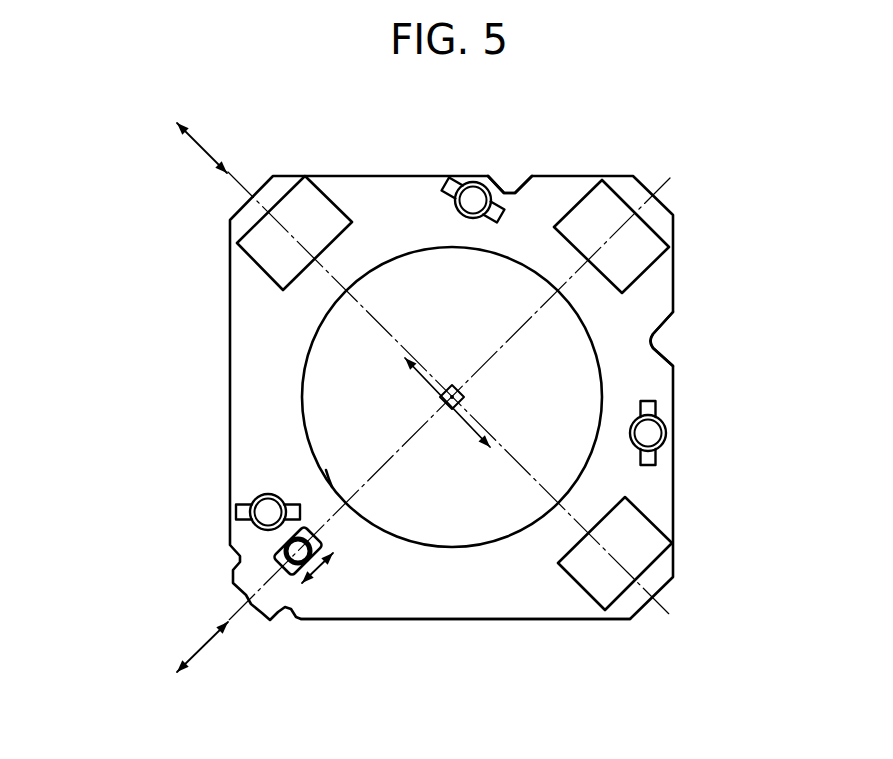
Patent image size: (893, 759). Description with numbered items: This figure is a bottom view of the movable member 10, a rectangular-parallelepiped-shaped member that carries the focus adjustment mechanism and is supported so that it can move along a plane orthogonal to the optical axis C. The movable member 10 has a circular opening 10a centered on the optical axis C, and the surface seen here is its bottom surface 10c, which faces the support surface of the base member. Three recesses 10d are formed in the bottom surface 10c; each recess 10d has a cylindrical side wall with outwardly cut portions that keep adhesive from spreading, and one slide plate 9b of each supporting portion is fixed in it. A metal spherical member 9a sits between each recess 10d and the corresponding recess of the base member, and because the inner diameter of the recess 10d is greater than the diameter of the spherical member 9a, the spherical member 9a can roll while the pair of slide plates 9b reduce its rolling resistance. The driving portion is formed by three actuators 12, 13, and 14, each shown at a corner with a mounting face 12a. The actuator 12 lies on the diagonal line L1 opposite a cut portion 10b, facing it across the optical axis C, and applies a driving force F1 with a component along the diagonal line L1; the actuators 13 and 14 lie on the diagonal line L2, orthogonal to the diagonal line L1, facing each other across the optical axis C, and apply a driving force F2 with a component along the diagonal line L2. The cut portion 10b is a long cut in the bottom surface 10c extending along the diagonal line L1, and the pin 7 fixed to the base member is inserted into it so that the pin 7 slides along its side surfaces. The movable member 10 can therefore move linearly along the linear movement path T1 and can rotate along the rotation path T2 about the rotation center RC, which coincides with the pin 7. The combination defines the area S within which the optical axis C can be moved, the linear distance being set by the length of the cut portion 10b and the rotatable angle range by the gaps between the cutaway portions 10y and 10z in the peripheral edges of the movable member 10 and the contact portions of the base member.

The movable member 10 is at (626, 130).
The circular opening 10a is at (303, 388).
The cut portion 10b is at (277, 560).
The bottom surface 10c is at (477, 604).
The recess 10d is at (482, 187).
The cutaway portion 10y is at (502, 188).
The cutaway portion 10z is at (660, 348).
The mounting surface of magnet 12a is at (456, 393).
The actuator 12 is at (645, 273).
The actuator 13 is at (647, 517).
The actuator 14 is at (262, 271).
The spherical member 9a is at (470, 180).
The slide plate 9b is at (442, 183).
The pin 7 is at (290, 579).
The optical axis C is at (452, 386).
The area S is at (447, 408).
The rotation center RC is at (333, 486).
The linear movement path T1 is at (318, 572).
The rotation path T2 is at (423, 381).
The driving force F1 is at (202, 647).
The driving force F2 is at (202, 142).
The diagonal line L1 is at (660, 190).
The diagonal line L2 is at (663, 603).